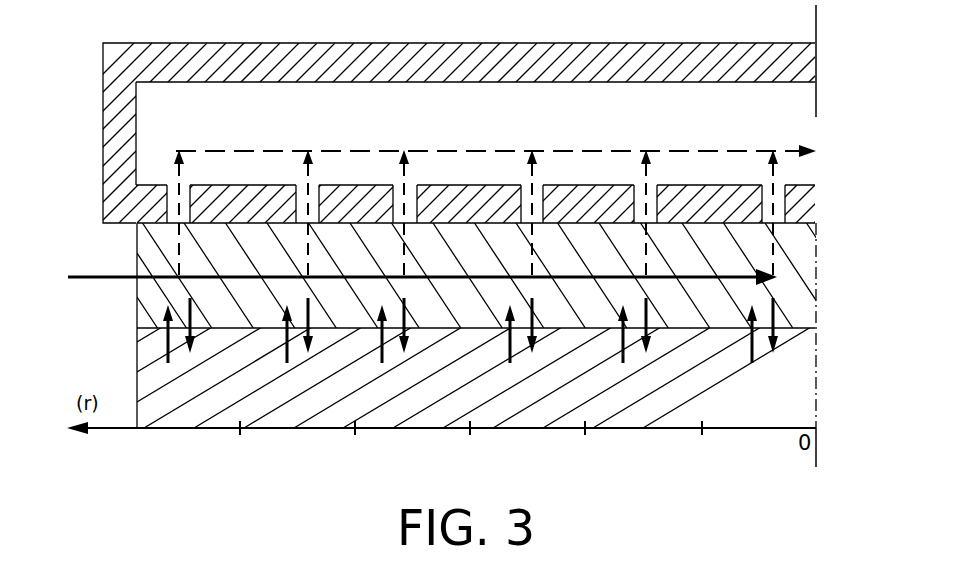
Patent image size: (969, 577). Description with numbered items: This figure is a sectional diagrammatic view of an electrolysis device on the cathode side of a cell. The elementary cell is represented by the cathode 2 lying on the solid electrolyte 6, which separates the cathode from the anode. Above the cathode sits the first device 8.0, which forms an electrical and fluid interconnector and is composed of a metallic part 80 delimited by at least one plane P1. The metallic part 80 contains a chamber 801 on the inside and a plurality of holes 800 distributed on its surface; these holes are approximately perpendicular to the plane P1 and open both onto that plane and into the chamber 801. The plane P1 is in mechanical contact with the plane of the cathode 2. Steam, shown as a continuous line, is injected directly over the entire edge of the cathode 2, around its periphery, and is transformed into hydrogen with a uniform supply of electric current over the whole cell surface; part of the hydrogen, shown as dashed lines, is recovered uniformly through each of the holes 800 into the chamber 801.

The first device 8.0 is at (123, 113).
The metallic part 80 is at (147, 195).
The holes 800 is at (182, 196).
The chamber 801 is at (473, 122).
The plane P1 is at (812, 231).
The cathode 2 is at (802, 300).
The electrolyte 6 is at (800, 377).